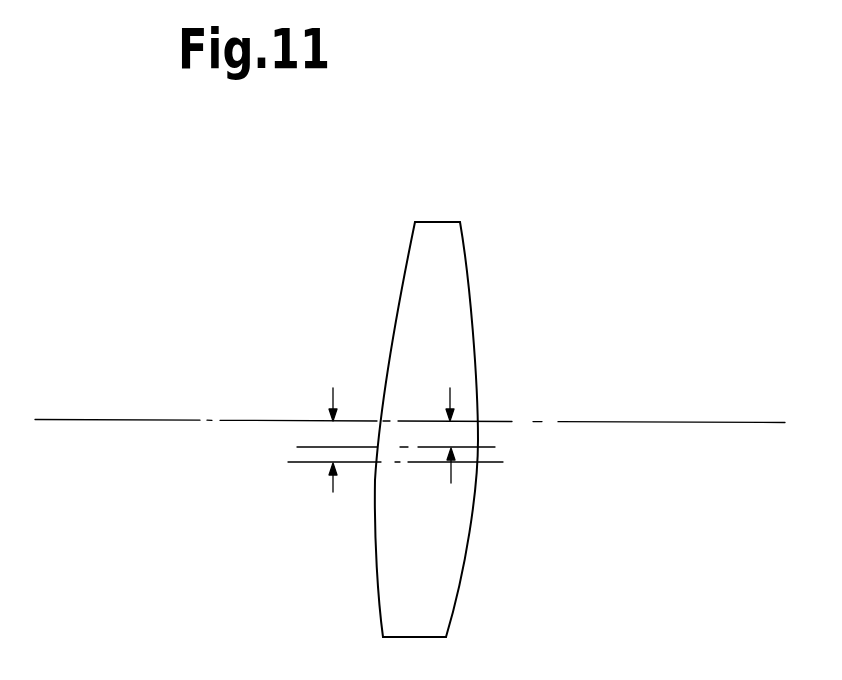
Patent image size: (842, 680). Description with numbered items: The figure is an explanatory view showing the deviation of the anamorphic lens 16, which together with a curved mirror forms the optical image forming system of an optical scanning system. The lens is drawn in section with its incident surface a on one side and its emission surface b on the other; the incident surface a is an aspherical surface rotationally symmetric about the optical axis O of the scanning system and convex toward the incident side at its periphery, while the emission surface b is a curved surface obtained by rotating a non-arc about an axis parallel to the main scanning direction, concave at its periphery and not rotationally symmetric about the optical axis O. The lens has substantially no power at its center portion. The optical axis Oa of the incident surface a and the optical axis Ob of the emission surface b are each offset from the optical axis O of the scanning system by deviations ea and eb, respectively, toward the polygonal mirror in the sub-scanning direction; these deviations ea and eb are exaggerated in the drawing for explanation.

The anamorphic lens 16 is at (448, 402).
The incident surface a is at (437, 278).
The emission surface b is at (390, 326).
The optical axis O is at (707, 422).
The optical axis of incident surface Oa is at (455, 447).
The optical axis of emission surface Ob is at (414, 466).
The deviation of incident surface ea is at (455, 422).
The deviation of emission surface eb is at (333, 427).